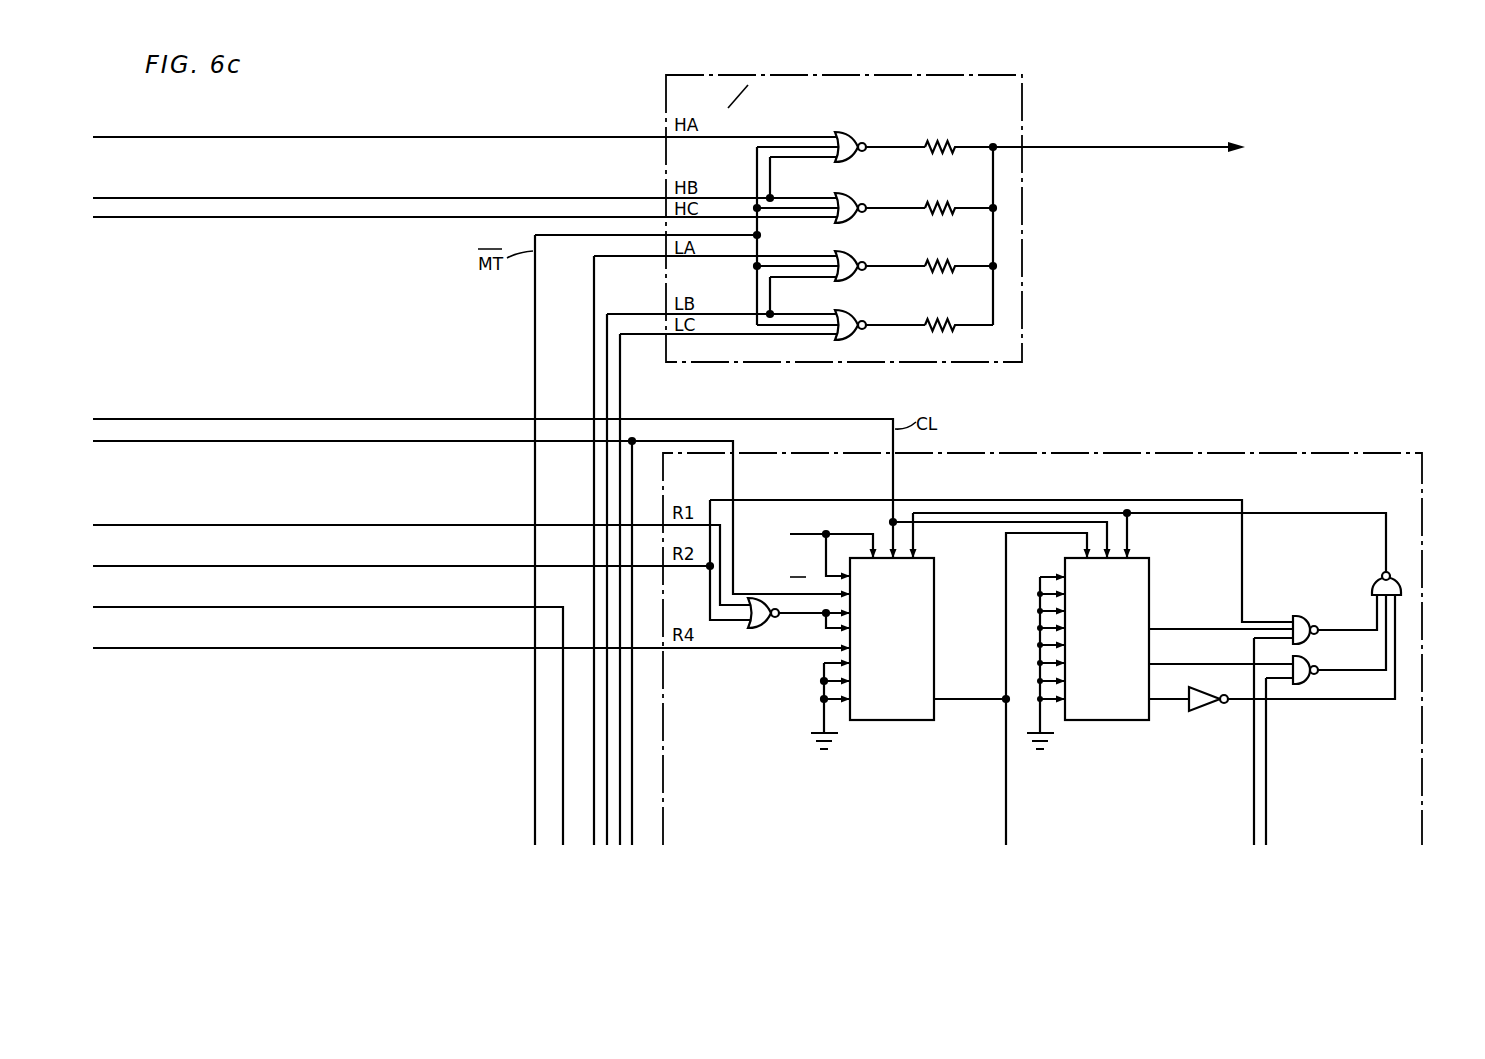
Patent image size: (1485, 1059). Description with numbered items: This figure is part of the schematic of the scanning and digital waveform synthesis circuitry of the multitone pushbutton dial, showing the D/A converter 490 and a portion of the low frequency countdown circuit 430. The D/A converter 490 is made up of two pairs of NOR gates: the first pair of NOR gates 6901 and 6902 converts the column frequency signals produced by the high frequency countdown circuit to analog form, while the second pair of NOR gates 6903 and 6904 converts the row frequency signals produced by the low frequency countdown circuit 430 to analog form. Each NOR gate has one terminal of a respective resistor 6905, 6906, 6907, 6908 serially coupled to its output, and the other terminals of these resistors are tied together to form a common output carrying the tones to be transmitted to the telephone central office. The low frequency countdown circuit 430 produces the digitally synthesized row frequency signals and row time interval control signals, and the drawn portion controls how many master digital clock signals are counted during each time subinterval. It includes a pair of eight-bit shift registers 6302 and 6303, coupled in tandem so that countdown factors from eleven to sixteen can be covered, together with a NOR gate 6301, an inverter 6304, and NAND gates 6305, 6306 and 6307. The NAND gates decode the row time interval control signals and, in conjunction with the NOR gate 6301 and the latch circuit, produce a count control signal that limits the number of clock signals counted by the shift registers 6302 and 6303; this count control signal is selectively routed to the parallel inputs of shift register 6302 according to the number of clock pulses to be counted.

The D/A converter 490 is at (912, 112).
The low frequency countdown circuit 430 is at (1367, 483).
The NOR gate 6901 is at (841, 140).
The NOR gate 6902 is at (841, 202).
The NOR gate 6903 is at (759, 259).
The NOR gate 6904 is at (766, 318).
The resistor 6905 is at (956, 136).
The resistor 6906 is at (956, 197).
The resistor 6907 is at (956, 254).
The resistor 6908 is at (956, 313).
The NOR gate 6301 is at (799, 621).
The 8-bit shift register 6302 is at (923, 588).
The 8-bit shift register 6303 is at (1140, 586).
The inverter 6304 is at (1272, 662).
The NAND gate 6305 is at (1339, 639).
The NAND gate 6306 is at (1364, 582).
The NAND gate 6307 is at (1335, 619).